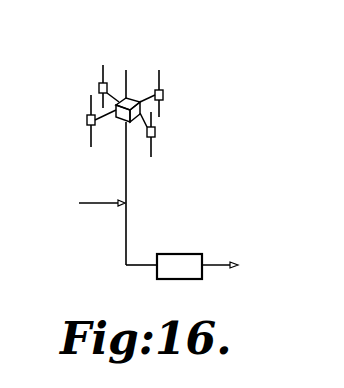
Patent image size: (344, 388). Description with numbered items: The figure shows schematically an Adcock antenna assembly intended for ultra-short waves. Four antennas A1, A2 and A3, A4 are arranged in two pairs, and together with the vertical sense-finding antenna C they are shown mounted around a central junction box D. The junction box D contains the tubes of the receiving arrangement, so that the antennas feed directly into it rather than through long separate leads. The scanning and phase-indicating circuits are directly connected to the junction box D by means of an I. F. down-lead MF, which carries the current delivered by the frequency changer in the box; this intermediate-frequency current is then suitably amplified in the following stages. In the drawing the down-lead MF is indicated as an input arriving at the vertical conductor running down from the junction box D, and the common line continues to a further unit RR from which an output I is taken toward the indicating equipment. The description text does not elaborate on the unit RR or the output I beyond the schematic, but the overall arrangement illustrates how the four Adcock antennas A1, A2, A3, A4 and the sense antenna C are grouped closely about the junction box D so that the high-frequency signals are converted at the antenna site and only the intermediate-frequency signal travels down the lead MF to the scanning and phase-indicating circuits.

The antenna A1 is at (107, 78).
The antenna A2 is at (150, 142).
The antenna A3 is at (155, 84).
The antenna A4 is at (95, 115).
The vertical sense-finding antenna C is at (126, 161).
The junction box D is at (129, 101).
The I. F. down-lead MF is at (87, 205).
The recording relay RR is at (164, 266).
The indicator output I is at (227, 267).